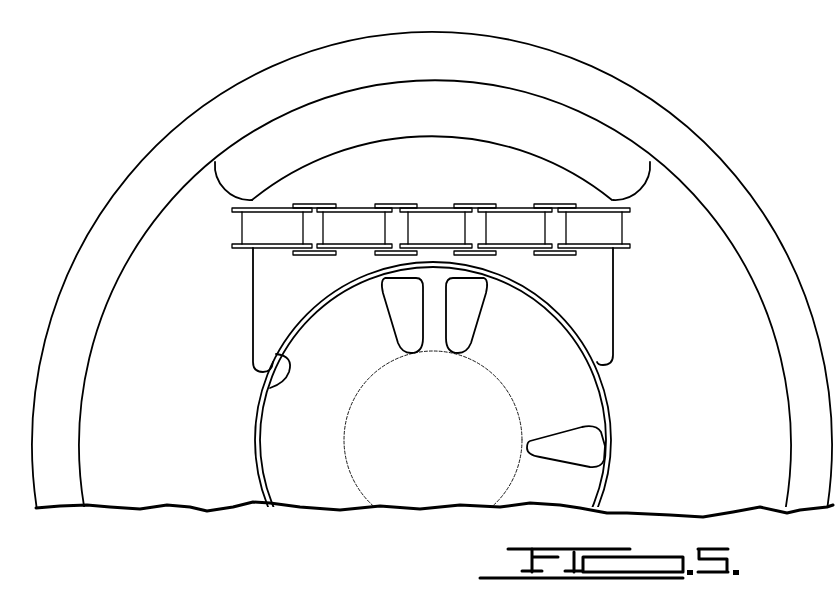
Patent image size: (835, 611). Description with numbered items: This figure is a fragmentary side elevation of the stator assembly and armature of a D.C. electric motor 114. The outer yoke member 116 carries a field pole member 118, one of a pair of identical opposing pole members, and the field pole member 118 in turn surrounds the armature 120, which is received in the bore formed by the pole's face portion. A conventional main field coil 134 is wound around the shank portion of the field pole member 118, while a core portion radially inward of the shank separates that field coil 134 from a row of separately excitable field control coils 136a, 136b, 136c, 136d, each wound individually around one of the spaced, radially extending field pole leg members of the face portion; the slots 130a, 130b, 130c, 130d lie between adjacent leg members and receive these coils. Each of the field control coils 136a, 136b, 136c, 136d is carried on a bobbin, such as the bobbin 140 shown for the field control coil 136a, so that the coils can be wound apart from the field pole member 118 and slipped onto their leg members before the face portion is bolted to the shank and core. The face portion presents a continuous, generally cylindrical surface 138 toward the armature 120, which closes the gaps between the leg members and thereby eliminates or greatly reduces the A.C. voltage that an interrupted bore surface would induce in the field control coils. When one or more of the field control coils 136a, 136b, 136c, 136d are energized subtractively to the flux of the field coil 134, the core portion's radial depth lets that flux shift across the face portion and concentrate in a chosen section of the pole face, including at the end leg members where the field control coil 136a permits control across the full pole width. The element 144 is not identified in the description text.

The D.C. electric motor 114 is at (93, 109).
The yoke member 116 is at (188, 132).
The field pole member 118 is at (616, 316).
The armature 120 is at (257, 443).
The slot 130a is at (313, 220).
The slot 130b is at (393, 222).
The slot 130c is at (473, 222).
The slot 130d is at (551, 220).
The field coil 134 is at (230, 170).
The field control coil 136a is at (248, 225).
The field control coil 136b is at (360, 237).
The field control coil 136c is at (433, 220).
The field control coil 136d is at (527, 238).
The continuous, generally cylindrical surface 138 is at (272, 382).
The bobbin 140 is at (247, 250).
The lobe 144 is at (397, 326).